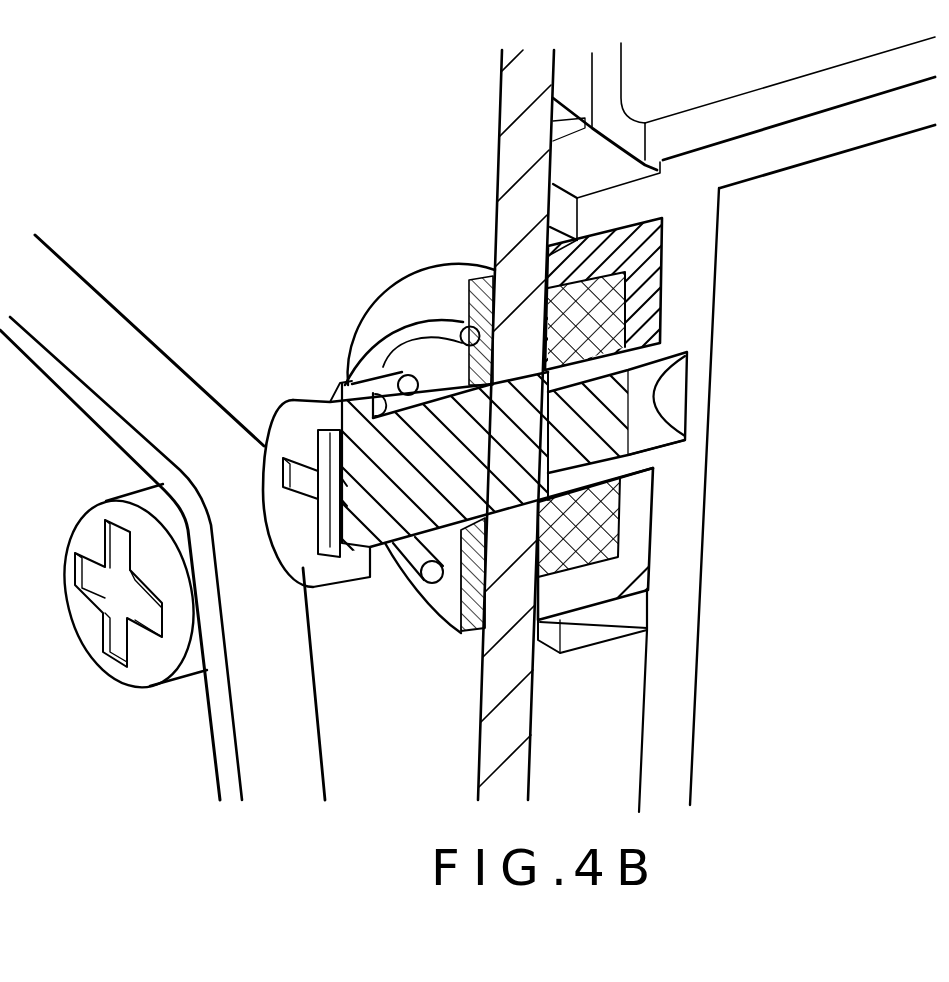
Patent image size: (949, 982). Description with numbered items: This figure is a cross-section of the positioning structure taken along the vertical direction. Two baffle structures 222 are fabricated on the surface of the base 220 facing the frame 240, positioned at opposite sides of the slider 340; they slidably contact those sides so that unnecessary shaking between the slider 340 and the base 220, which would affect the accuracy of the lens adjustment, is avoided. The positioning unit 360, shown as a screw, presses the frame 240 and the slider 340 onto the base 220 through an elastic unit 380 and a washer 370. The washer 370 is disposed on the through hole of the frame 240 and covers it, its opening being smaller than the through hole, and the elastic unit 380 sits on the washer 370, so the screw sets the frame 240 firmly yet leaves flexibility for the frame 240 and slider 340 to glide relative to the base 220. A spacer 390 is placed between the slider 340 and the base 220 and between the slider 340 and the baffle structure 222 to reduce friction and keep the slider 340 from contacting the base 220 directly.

The base 220 is at (690, 288).
The baffle structure 222 is at (612, 207).
The frame 240 is at (520, 132).
The slider 340 is at (580, 317).
The positioning unit 360 is at (285, 408).
The washer 370 is at (435, 597).
The elastic unit 380 is at (422, 340).
The spacer 390 is at (638, 520).